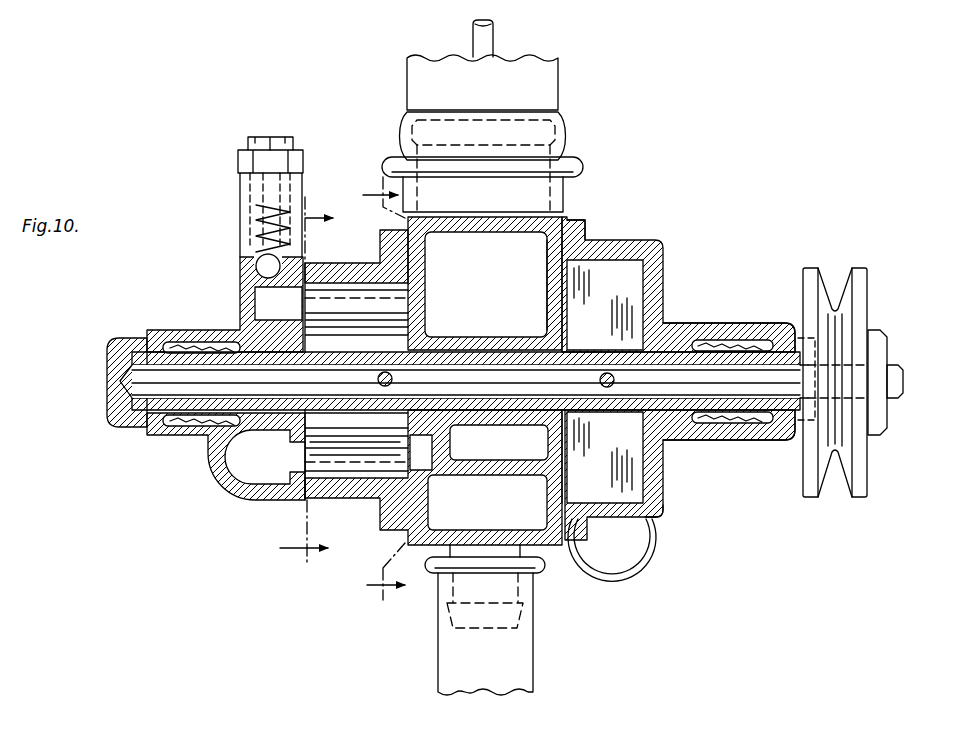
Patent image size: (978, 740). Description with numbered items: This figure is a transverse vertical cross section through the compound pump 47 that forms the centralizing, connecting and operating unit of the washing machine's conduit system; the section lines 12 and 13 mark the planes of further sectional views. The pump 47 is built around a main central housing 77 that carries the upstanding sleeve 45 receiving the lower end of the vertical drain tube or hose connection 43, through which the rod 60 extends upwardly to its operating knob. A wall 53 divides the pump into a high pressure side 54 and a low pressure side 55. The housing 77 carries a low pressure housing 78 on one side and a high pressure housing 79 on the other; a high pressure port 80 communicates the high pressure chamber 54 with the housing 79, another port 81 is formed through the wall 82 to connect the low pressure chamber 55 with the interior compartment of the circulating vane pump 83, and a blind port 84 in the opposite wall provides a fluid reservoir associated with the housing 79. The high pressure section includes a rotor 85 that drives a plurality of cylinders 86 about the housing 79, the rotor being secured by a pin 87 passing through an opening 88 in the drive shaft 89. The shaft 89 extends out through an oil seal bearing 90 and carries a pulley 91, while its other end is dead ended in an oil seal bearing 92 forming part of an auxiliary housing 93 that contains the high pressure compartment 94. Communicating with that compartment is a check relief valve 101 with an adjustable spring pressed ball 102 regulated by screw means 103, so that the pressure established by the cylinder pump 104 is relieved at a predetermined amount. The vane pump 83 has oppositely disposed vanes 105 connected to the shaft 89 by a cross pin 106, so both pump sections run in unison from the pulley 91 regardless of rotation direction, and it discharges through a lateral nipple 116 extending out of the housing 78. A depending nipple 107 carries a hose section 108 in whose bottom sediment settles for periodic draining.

The rod 60 is at (483, 32).
The tube or hose connection 43 is at (425, 72).
The sleeve 45 is at (536, 136).
The pump 47 is at (575, 211).
The main central housing 77 is at (580, 238).
The vanes 105 is at (626, 278).
The low pressure housing 78 is at (656, 272).
The oil seal bearing 90 is at (732, 327).
The pulley 91 is at (858, 283).
The drive shaft 89 is at (133, 384).
The oil seal bearing 92 is at (185, 328).
The high pressure housing 79 is at (334, 270).
The high pressure port 80 is at (416, 297).
The cylinders 86 is at (380, 313).
The wall 82 is at (553, 312).
The high pressure side 54 is at (500, 270).
The opening 88 is at (377, 379).
The pin 87 is at (396, 383).
The cross pin 106 is at (607, 388).
The port 81 is at (558, 440).
The rotor 85 is at (380, 413).
The wall 53 is at (456, 477).
The low pressure side 55 is at (505, 452).
The blind port 84 is at (417, 465).
The vane pump 83 is at (660, 517).
The lateral discharge nipple 116 is at (633, 543).
The depending nipple 107 is at (517, 615).
The hose 108 is at (450, 678).
The cylinder pump 104 is at (355, 470).
The auxiliary housing 93 is at (253, 494).
The high pressure compartment 94 is at (224, 485).
The check relief valve 101 is at (232, 195).
The spring pressed ball 102 is at (252, 264).
The screw means 103 is at (256, 136).
The section line 12 is at (305, 382).
The section line 13 is at (376, 392).